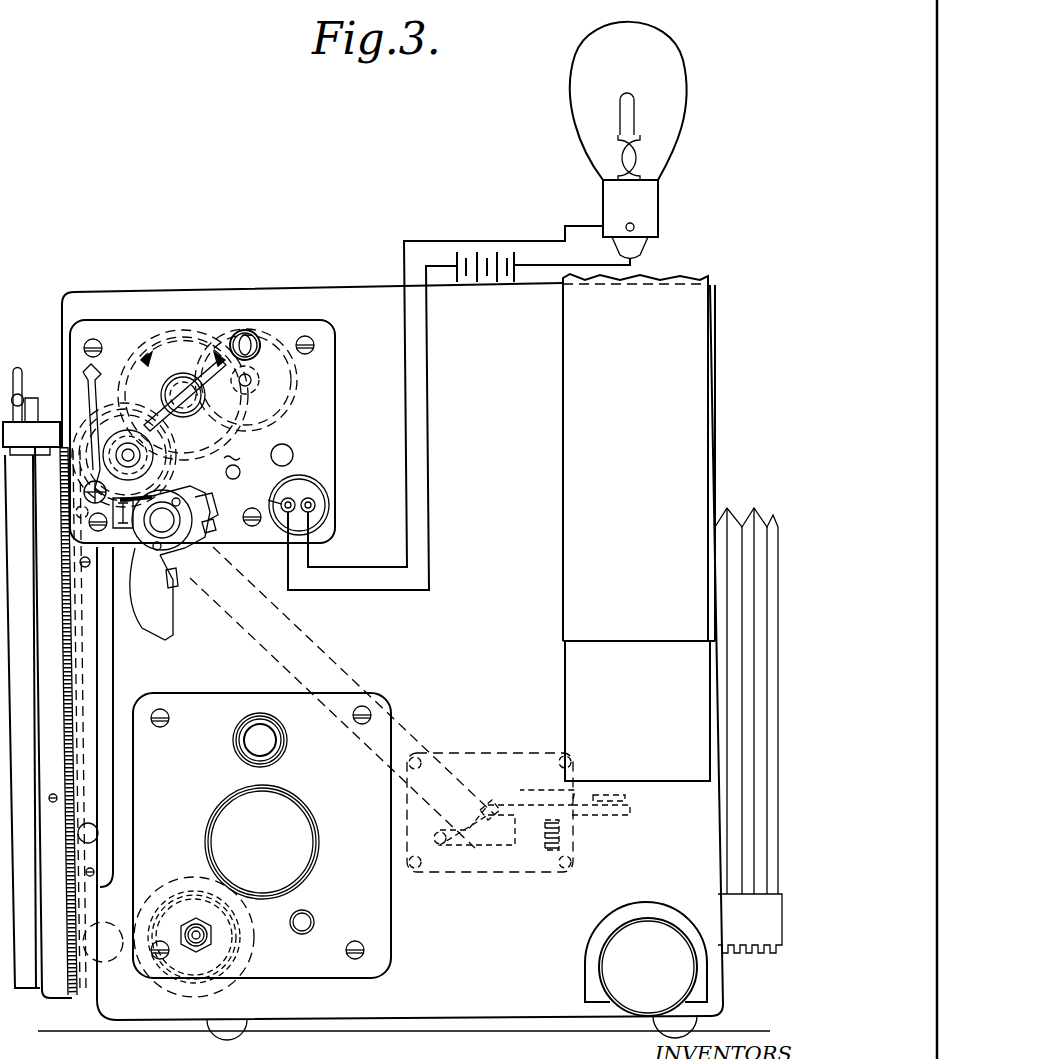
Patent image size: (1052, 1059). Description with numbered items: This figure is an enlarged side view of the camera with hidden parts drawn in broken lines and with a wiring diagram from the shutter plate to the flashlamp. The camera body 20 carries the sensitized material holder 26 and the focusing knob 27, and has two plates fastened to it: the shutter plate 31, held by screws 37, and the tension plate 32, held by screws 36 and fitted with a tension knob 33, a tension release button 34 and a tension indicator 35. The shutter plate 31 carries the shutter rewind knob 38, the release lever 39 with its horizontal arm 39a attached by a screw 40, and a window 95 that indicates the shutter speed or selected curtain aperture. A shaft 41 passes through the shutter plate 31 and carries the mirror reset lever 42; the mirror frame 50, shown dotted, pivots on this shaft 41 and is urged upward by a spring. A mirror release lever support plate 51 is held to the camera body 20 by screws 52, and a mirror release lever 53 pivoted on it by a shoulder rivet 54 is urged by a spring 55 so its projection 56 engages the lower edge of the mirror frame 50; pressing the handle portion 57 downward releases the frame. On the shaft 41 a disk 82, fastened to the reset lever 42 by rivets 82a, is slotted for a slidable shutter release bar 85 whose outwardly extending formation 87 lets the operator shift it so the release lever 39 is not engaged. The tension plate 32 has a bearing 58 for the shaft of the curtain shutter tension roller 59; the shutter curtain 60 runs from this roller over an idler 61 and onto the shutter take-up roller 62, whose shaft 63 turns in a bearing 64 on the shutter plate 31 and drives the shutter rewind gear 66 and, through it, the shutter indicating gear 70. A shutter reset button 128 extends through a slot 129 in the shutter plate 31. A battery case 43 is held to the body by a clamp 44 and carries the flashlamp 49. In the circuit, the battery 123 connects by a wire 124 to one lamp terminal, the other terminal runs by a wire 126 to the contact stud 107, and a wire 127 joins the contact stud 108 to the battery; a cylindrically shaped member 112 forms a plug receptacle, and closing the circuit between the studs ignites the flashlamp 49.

The camera body 20 is at (306, 291).
The sensitized material holder 26 is at (25, 792).
The focusing knob 27 is at (612, 947).
The shutter plate 31 is at (325, 462).
The tension plate 32 is at (393, 935).
The tension knob 33 is at (300, 858).
The tension release button 34 is at (314, 920).
The tension indicator 35 is at (272, 748).
The screws 36 is at (166, 716).
The screws 37 is at (93, 339).
The shutter rewind knob 38 is at (191, 386).
The release lever 39 is at (82, 386).
The horizontal arm 39a is at (207, 497).
The screw 40 is at (87, 492).
The shaft 41 is at (160, 532).
The mirror reset lever 42 is at (158, 625).
The battery case 43 is at (700, 371).
The clamp 44 is at (563, 563).
The flashlamp 49 is at (683, 90).
The mirror frame 50 is at (300, 640).
The mirror release lever support plate 51 is at (493, 870).
The screws 52 is at (418, 759).
The mirror release lever 53 is at (538, 805).
The shoulder rivet 54 is at (442, 845).
The spring 55 is at (565, 842).
The projection 56 is at (492, 804).
The handle portion 57 is at (618, 795).
The bearing 58 is at (215, 945).
The curtain shutter tension roller 59 is at (161, 890).
The shutter curtain 60 is at (84, 737).
The idler 61 is at (105, 930).
The shutter take-up roller 62 is at (183, 395).
The shaft 63 is at (125, 450).
The bearing 64 is at (150, 452).
The shutter rewind gear 66 is at (222, 448).
The shutter indicating gear 70 is at (278, 410).
The disk 82 is at (180, 545).
The rivets 82a is at (172, 497).
The shutter release bar 85 is at (128, 531).
The outwardly extending formation 87 is at (210, 530).
The window 95 is at (245, 331).
The contact stud 107 is at (312, 503).
The contact stud 108 is at (259, 500).
The cylindrically shaped member 112 is at (322, 515).
The battery 123 is at (487, 250).
The wire 124 is at (556, 266).
The wire 126 is at (405, 386).
The wire 127 is at (429, 400).
The shutter reset button 128 is at (242, 474).
The slot 129 is at (250, 455).